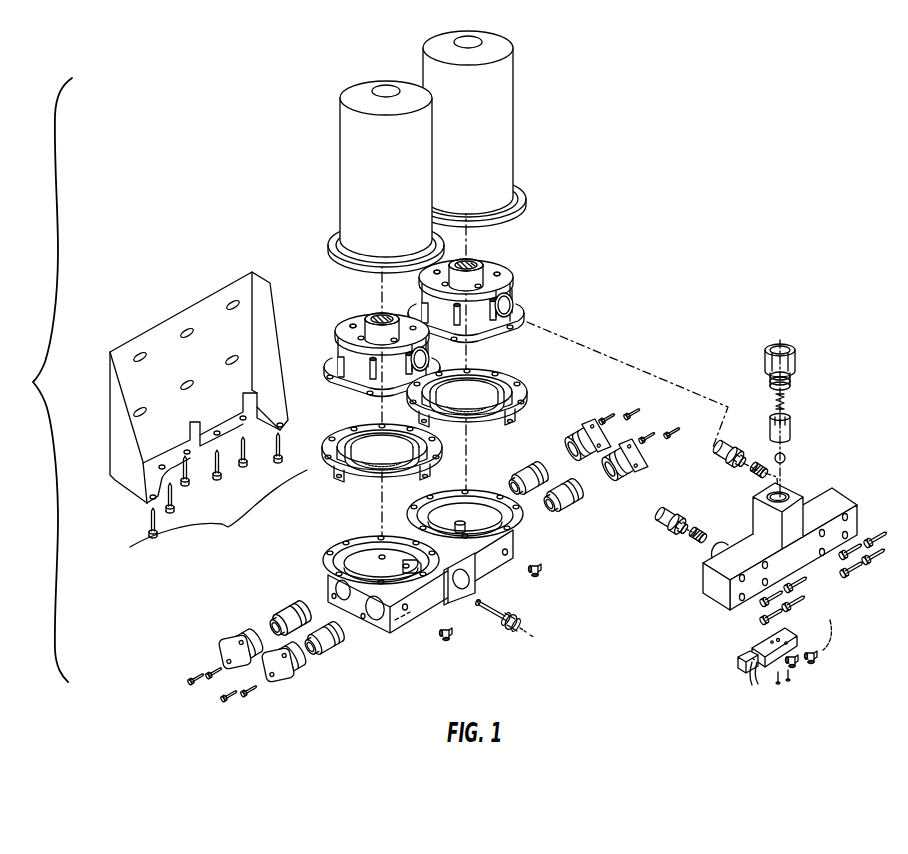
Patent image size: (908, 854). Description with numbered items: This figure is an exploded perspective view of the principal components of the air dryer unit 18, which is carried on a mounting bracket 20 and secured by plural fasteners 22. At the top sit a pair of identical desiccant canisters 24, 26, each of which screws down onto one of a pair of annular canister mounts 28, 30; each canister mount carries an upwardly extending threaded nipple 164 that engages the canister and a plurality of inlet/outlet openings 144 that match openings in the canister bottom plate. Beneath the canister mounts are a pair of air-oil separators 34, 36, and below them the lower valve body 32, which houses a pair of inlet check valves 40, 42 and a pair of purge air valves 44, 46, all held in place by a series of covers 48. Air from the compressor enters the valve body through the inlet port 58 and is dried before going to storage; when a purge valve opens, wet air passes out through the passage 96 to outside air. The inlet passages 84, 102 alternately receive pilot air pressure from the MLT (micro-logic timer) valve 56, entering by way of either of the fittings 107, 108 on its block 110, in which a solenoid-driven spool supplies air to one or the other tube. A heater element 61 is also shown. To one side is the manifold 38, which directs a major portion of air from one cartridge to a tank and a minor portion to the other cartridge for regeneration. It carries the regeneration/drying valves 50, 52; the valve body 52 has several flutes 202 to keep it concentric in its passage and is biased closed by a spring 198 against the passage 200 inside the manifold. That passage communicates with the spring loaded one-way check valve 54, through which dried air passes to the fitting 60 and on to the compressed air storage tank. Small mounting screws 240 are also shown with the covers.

The air dryer unit 18 is at (40, 380).
The mounting bracket 20 is at (166, 296).
The fasteners 22 is at (226, 540).
The desiccant canister 24 is at (330, 132).
The desiccant canister 26 is at (538, 53).
The annular canister mount 28 is at (343, 316).
The annular canister mount 30 is at (521, 258).
The lower valve body 32 is at (398, 634).
The air-oil separator 34 is at (346, 426).
The air-oil separator 36 is at (518, 372).
The manifold 38 is at (843, 490).
The inlet check valve 40 is at (579, 518).
The inlet check valve 42 is at (343, 648).
The purge air valve 44 is at (523, 457).
The purge air valve 46 is at (274, 602).
The covers 48 is at (217, 634).
The regeneration/drying valve 50 is at (681, 502).
The regeneration/drying valve 52 is at (739, 436).
The spring loaded one-way check valve 54 is at (804, 430).
The MLT valve 56 is at (766, 694).
The inlet port 58 is at (474, 605).
The fitting 60 is at (807, 364).
The heater element 61 is at (520, 620).
The inlet passage 84 is at (408, 608).
The passage 96 is at (381, 555).
The port 102 is at (508, 553).
The fitting 107 is at (449, 645).
The fitting 108 is at (545, 572).
The block 110 is at (752, 645).
The inlet/outlet openings 144 is at (438, 270).
The nipple 164 is at (380, 316).
The spring 198 is at (772, 474).
The passage 200 is at (741, 442).
The flutes 202 is at (716, 463).
The mounting screws 240 is at (202, 676).